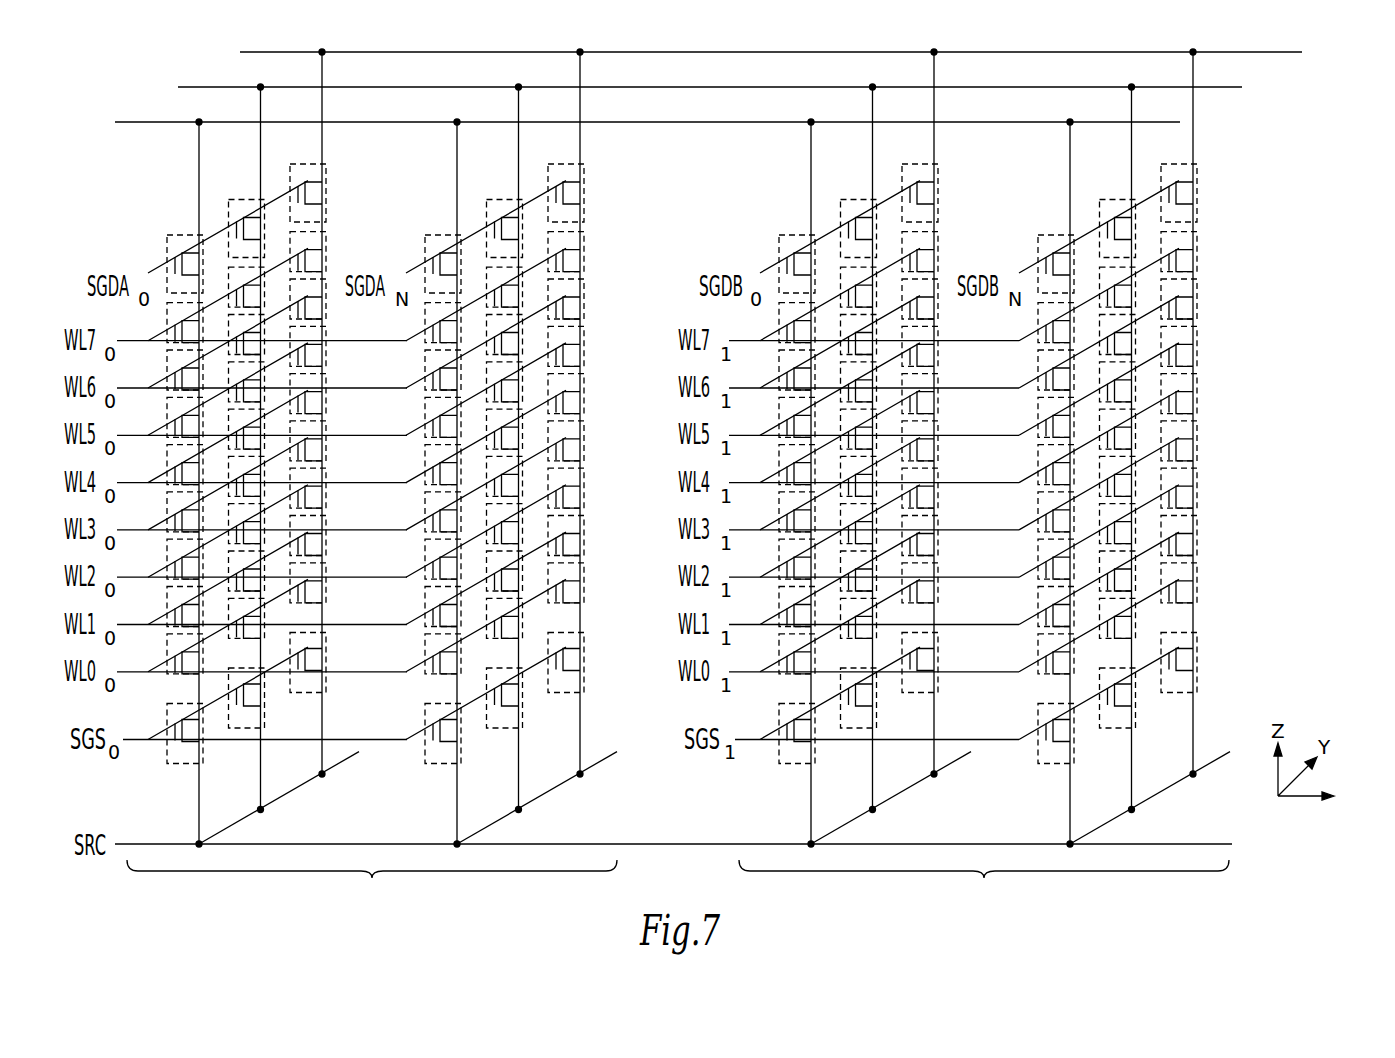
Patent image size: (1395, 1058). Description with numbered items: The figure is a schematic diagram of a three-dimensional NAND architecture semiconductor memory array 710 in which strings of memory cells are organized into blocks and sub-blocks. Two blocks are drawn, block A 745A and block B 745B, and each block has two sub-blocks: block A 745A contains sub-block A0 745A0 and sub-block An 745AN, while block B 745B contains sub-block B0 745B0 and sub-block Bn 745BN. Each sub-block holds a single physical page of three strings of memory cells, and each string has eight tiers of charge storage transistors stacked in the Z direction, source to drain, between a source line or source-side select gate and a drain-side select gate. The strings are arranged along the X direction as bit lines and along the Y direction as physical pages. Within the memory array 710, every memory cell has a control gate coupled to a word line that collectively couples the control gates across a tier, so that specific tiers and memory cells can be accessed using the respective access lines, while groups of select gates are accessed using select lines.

The 3D NAND architecture semiconductor memory array 710 is at (1307, 87).
The block A 745A is at (393, 484).
The block B 745B is at (1005, 484).
The sub-block A0 745A0 is at (297, 800).
The sub-block An 745AN is at (555, 800).
The sub-block B0 745B0 is at (909, 800).
The sub-block Bn 745BN is at (1168, 800).